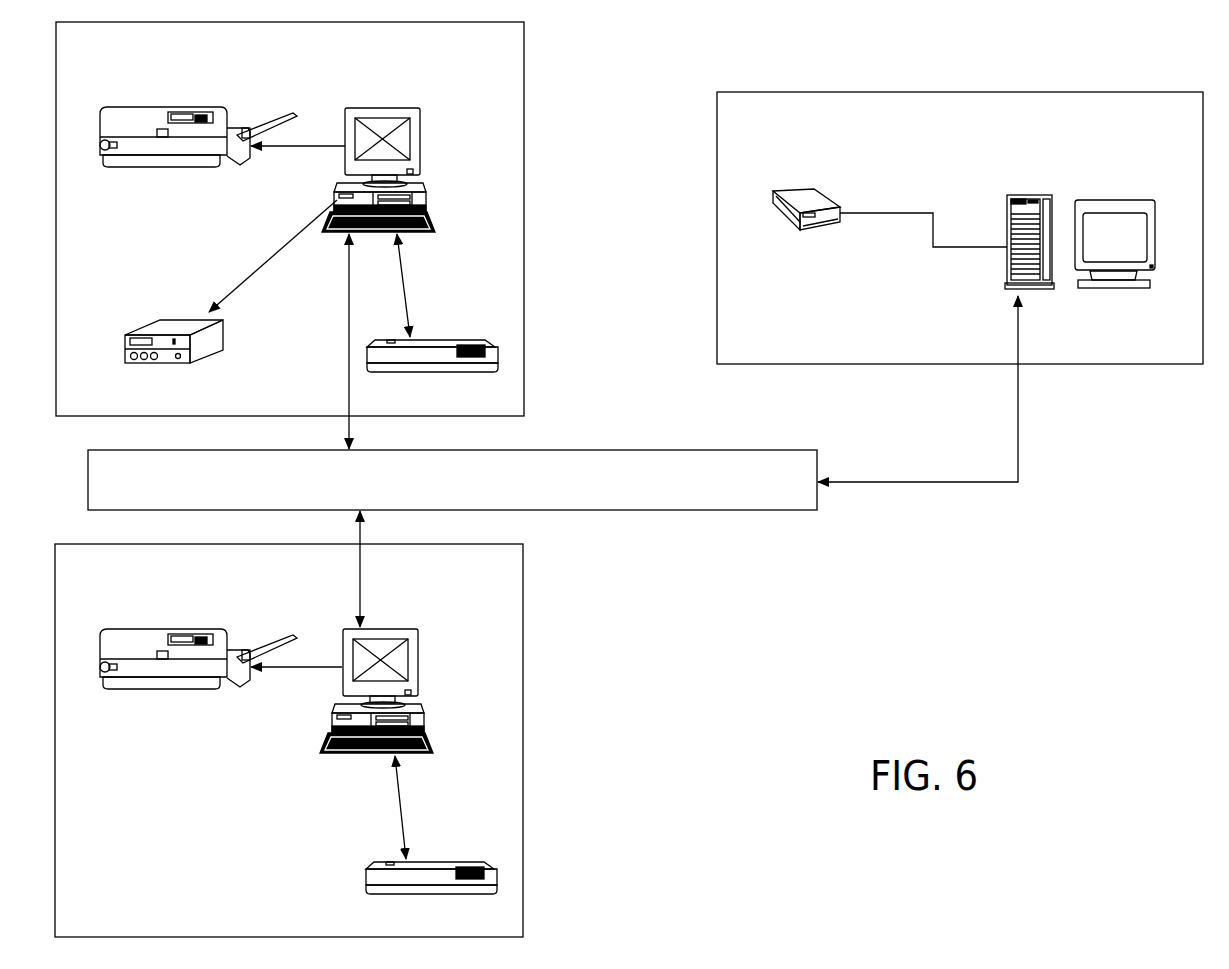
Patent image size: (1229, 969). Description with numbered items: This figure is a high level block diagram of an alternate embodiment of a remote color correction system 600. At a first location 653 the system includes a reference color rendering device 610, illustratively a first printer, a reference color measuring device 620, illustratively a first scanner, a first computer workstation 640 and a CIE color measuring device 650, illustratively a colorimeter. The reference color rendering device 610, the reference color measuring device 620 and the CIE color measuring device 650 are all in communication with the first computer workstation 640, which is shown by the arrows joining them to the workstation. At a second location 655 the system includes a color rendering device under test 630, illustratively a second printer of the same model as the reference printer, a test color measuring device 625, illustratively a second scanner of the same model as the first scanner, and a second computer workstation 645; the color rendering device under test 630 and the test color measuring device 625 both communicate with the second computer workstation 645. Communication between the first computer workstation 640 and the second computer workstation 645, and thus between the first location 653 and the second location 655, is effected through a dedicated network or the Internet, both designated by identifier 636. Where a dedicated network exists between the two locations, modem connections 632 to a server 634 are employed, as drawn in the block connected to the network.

The remote color correction system 600 is at (1052, 721).
The reference color rendering device 610 is at (147, 167).
The reference color measuring device 620 is at (470, 340).
The test color measuring device 625 is at (469, 862).
The color rendering device under test 630 is at (147, 689).
The modem connections 632 is at (817, 232).
The server 634 is at (1122, 200).
The network or Internet 636 is at (637, 450).
The first computer workstation 640 is at (390, 107).
The second computer workstation 645 is at (387, 628).
The CIE color measuring device 650 is at (188, 320).
The first location 653 is at (115, 404).
The second location 655 is at (115, 926).